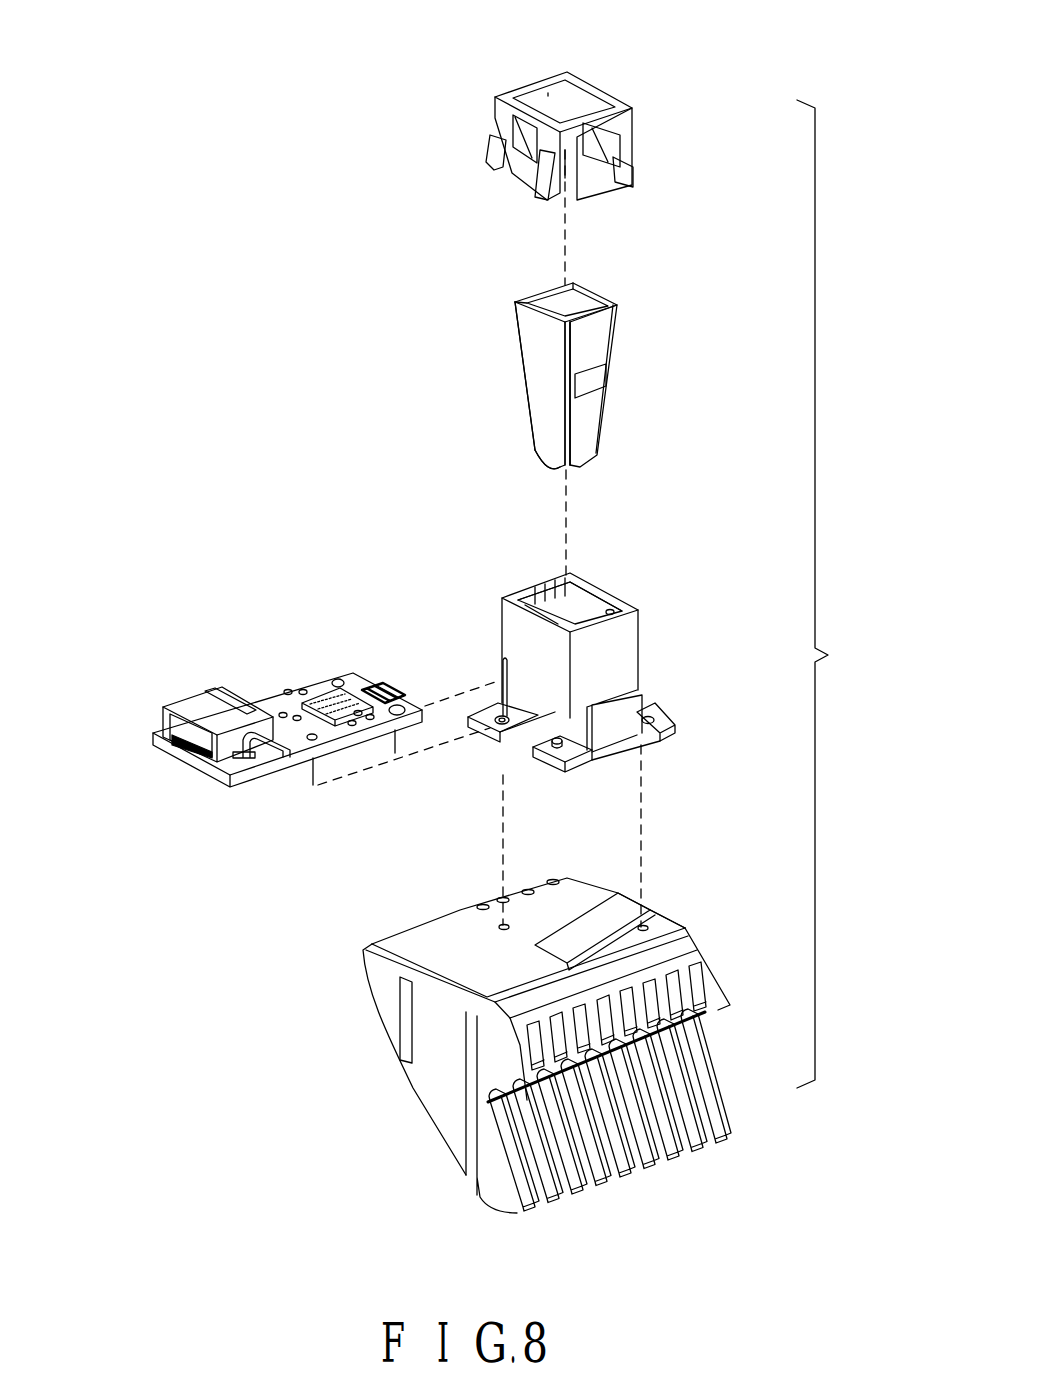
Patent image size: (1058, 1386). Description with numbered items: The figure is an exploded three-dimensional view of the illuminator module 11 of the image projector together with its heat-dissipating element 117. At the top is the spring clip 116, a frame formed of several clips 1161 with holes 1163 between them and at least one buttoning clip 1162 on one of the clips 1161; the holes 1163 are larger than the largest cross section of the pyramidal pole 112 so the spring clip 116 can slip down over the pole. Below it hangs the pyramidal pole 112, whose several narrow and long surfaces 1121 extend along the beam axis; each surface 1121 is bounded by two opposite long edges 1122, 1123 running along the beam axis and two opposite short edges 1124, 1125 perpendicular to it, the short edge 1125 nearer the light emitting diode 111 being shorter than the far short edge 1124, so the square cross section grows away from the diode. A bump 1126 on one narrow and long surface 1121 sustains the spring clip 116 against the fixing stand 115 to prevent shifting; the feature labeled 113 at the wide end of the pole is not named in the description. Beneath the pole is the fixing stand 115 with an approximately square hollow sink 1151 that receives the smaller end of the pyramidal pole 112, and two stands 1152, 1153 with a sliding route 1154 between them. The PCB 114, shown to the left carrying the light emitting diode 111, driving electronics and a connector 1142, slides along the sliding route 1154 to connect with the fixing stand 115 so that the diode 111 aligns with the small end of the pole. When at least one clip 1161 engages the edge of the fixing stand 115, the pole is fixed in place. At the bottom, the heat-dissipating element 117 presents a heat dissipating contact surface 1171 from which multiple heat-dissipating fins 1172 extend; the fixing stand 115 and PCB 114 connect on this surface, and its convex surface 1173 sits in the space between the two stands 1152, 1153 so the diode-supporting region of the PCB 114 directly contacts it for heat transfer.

The illuminator module 11 is at (837, 594).
The spring clip 116 is at (627, 118).
The clips 1161 is at (517, 180).
The buttoning clip 1162 is at (620, 173).
The holes 1163 is at (548, 93).
The pyramidal pole 112 is at (533, 342).
The receiving opening 113 is at (580, 302).
The narrow and long surfaces 1121 is at (587, 425).
The long edge 1122 is at (527, 375).
The long edge 1123 is at (565, 422).
The short edge 1124 is at (518, 302).
The short edge 1125 is at (548, 467).
The bump 1126 is at (600, 378).
The fixing stand 115 is at (625, 647).
The hollow sink 1151 is at (590, 603).
The stand 1152 is at (643, 713).
The stand 1153 is at (503, 683).
The sliding route 1154 is at (507, 740).
The PCB 114 is at (273, 698).
The connector 1142 is at (197, 712).
The light emitting diode 111 is at (321, 703).
The heat-dissipating element 117 is at (673, 947).
The heat dissipating contact surface 1171 is at (660, 927).
The heat-dissipating fins 1172 is at (637, 1108).
The convex surface 1173 is at (618, 902).